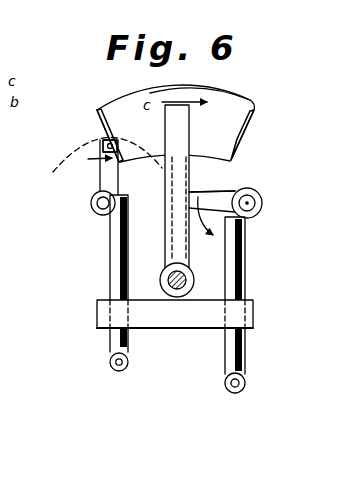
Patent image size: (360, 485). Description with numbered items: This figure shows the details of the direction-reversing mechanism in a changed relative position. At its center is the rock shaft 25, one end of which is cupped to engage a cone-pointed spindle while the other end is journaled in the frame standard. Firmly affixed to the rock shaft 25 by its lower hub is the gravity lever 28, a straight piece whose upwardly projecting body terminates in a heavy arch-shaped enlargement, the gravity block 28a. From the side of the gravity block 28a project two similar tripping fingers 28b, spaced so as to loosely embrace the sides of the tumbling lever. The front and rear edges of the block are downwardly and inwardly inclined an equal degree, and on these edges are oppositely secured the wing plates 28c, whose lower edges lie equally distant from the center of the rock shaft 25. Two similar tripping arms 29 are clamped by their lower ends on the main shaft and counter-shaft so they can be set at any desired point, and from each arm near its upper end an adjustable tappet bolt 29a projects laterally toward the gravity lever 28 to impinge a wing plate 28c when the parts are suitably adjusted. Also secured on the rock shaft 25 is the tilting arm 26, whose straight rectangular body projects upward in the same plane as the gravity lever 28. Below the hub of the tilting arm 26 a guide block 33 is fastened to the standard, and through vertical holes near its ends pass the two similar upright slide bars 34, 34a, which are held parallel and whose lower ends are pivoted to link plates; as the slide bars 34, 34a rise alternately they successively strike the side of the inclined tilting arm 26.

The rock shaft 25 is at (205, 267).
The tilting arm 26 is at (187, 138).
The gravity lever 28 is at (107, 117).
The gravity block 28a is at (232, 93).
The tripping fingers 28b is at (66, 134).
The wing plates 28c is at (277, 130).
The tripping arms 29 is at (98, 143).
The tappet bolts 29a is at (207, 182).
The guide block 33 is at (255, 313).
The slide bar 34 is at (243, 277).
The slide bar 34a is at (113, 265).